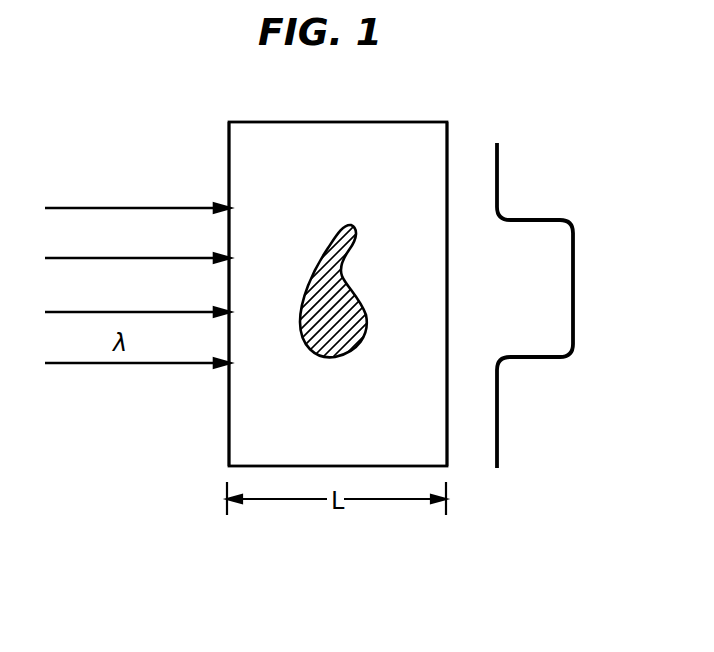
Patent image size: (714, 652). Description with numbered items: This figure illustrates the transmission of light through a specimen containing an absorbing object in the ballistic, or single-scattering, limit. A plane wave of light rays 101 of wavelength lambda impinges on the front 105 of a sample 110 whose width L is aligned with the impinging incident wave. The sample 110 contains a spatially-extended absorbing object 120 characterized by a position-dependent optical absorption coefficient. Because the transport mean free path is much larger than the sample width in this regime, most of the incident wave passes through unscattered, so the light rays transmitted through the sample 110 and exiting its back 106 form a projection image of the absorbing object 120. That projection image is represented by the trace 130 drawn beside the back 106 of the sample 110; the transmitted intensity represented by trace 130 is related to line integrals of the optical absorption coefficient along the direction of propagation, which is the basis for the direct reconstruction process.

The light rays 101 is at (138, 179).
The front of sample 105 is at (229, 140).
The back of sample 106 is at (449, 140).
The sample 110 is at (330, 122).
The absorbing object 120 is at (357, 230).
The trace 130 is at (540, 218).